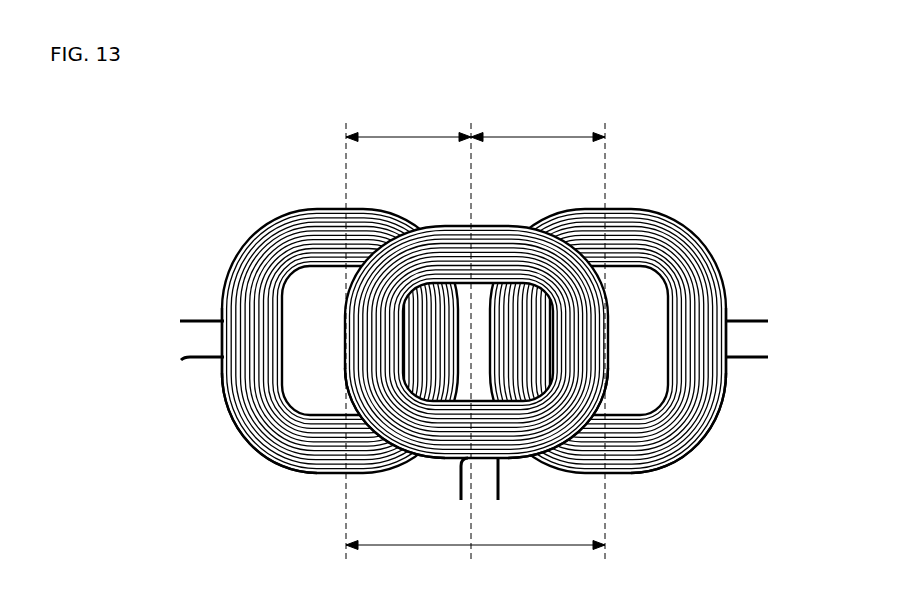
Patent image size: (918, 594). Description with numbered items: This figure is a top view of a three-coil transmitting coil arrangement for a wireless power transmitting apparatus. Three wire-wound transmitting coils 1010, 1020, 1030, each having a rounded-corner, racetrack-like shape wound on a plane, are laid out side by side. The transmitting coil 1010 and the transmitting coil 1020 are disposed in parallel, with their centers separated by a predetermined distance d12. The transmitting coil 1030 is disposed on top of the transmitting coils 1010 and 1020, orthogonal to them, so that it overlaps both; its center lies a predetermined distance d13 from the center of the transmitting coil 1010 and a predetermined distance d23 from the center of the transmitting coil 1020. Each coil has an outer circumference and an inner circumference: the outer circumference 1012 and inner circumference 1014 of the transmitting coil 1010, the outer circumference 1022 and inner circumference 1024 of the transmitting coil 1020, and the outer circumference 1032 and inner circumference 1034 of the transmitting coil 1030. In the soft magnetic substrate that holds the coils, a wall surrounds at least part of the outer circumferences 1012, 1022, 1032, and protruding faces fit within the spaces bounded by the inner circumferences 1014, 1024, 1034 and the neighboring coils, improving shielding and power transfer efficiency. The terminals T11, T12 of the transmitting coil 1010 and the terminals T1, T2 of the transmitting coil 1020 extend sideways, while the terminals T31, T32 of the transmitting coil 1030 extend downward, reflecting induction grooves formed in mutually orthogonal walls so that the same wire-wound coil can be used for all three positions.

The transmitting coil 1010 is at (287, 205).
The outer circumference of transmitting coil 1012 is at (214, 386).
The inner circumference of transmitting coil 1014 is at (240, 434).
The transmitting coil 1020 is at (631, 205).
The outer circumference of transmitting coil 1022 is at (703, 427).
The inner circumference of transmitting coil 1024 is at (718, 386).
The transmitting coil 1030 is at (491, 218).
The outer circumference of transmitting coil 1032 is at (513, 451).
The inner circumference of transmitting coil 1034 is at (422, 451).
The terminal of transmitting coil T11 is at (189, 323).
The terminal of transmitting coil T12 is at (189, 360).
The first terminal of second coil T1 is at (759, 323).
The second terminal of second coil T2 is at (759, 361).
The terminal of transmitting coil T31 is at (498, 491).
The terminal of transmitting coil T32 is at (458, 491).
The distance between coil centers d13 is at (408, 130).
The distance between coil centers d23 is at (538, 130).
The distance between coil centers d12 is at (475, 557).